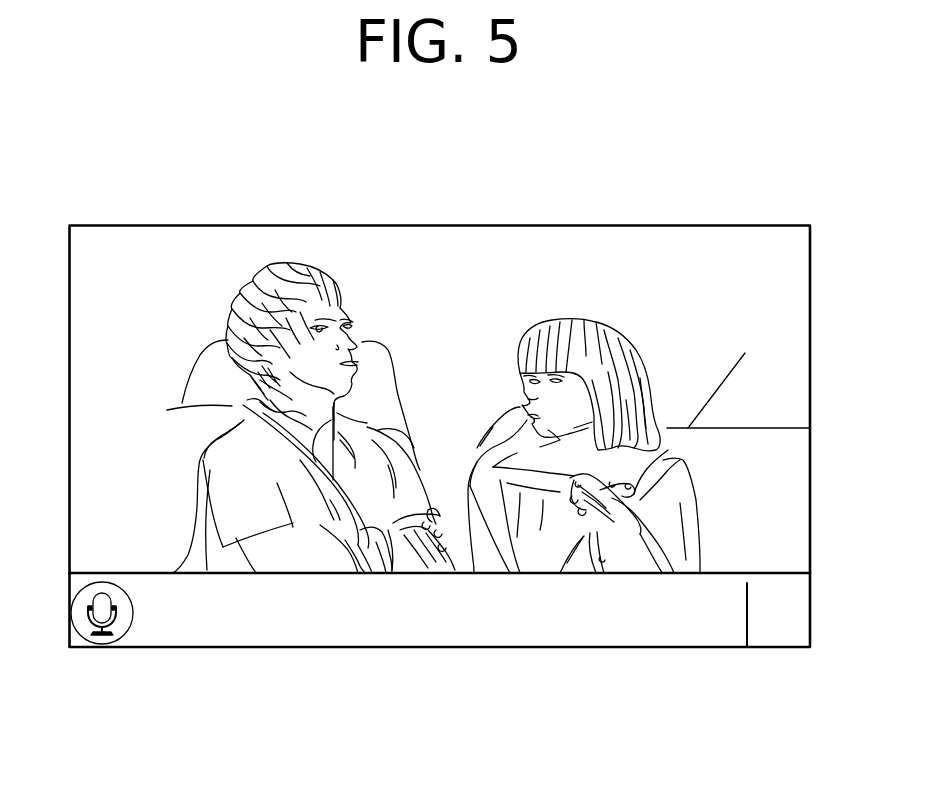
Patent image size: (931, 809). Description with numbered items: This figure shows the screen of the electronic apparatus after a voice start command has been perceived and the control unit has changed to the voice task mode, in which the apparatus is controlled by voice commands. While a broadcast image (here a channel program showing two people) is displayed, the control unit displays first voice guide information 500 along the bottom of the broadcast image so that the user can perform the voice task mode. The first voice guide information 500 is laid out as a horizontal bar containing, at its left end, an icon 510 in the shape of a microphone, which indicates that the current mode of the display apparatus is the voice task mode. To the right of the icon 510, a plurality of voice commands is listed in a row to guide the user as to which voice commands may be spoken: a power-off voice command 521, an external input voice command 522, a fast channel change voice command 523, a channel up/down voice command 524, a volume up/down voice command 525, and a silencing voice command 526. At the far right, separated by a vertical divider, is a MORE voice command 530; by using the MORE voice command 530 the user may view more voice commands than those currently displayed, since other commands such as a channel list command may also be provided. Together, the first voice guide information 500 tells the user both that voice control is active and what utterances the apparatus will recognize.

The first voice guide information 500 is at (80, 583).
The icon 510 is at (97, 640).
The power-off voice command 521 is at (177, 640).
The external input voice command 522 is at (284, 640).
The fast channel change voice command 523 is at (377, 641).
The channel up/down voice command 524 is at (483, 640).
The volume up/down voice command 525 is at (587, 640).
The silencing voice command 526 is at (691, 630).
The MORE voice command 530 is at (780, 630).